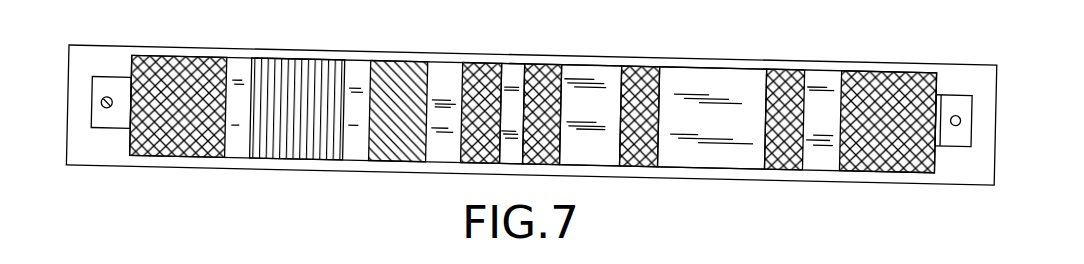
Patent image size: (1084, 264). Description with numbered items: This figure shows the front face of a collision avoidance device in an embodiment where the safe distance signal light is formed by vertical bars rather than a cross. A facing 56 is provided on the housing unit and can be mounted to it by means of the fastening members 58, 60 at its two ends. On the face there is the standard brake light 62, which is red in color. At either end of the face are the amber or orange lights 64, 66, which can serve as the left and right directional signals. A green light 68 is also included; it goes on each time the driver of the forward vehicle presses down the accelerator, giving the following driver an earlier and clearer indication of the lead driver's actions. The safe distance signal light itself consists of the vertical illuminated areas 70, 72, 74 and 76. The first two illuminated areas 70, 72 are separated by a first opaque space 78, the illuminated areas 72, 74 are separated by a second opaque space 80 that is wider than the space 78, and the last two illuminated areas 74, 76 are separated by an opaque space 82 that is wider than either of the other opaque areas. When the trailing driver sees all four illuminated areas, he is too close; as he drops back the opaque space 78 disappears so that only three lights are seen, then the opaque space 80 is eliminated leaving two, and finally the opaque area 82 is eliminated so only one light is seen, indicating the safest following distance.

The facing 56 is at (953, 62).
The fastening member 58 is at (962, 138).
The fastening member 60 is at (105, 123).
The brake light 62 is at (290, 67).
The amber or orange light 64 is at (193, 58).
The amber or orange light 66 is at (873, 73).
The green light 68 is at (405, 64).
The vertical illuminated area 70 is at (480, 62).
The vertical illuminated area 72 is at (540, 65).
The vertical illuminated area 74 is at (640, 71).
The vertical illuminated area 76 is at (785, 72).
The first opaque space 78 is at (509, 67).
The second opaque space 80 is at (596, 67).
The opaque space 82 is at (713, 75).